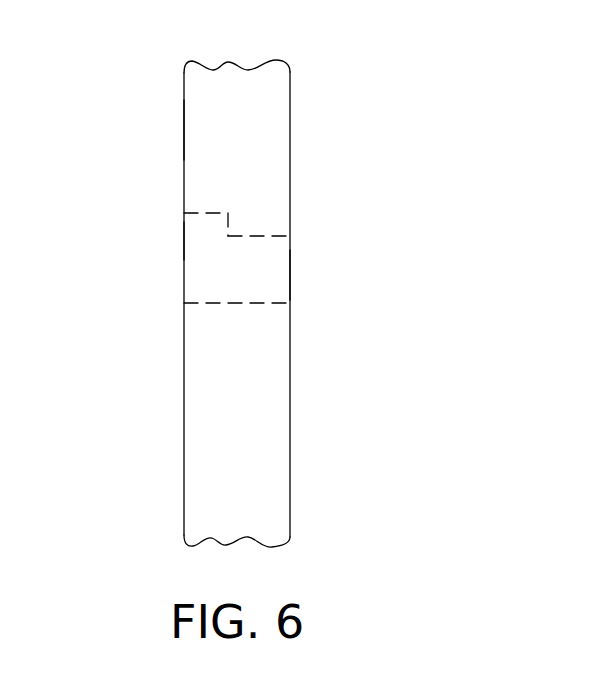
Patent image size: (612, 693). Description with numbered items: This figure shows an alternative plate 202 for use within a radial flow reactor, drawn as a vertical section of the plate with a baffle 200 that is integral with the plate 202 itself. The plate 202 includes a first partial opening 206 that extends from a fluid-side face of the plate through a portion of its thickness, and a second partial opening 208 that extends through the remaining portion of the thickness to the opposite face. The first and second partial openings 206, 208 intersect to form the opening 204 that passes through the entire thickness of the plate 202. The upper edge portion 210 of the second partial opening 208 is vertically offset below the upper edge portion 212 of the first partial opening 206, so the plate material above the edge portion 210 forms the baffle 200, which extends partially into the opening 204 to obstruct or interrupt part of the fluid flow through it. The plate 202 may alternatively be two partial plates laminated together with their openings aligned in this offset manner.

The baffle 200 is at (260, 211).
The plate 202 is at (193, 129).
The opening 204 is at (247, 285).
The first partial opening 206 is at (195, 241).
The second partial opening 208 is at (280, 270).
The upper edge portion of the second partial opening 210 is at (286, 236).
The upper edge portion of the first partial opening 212 is at (196, 212).